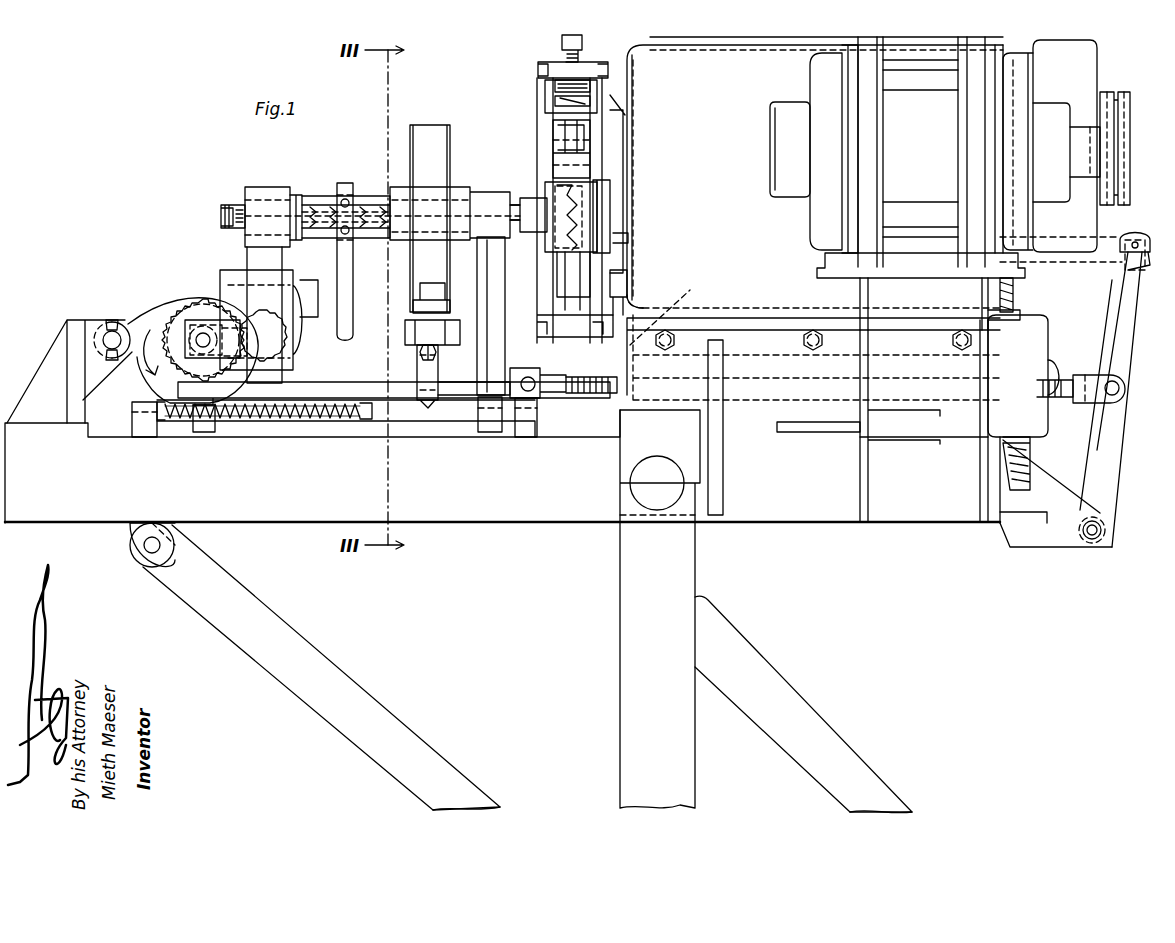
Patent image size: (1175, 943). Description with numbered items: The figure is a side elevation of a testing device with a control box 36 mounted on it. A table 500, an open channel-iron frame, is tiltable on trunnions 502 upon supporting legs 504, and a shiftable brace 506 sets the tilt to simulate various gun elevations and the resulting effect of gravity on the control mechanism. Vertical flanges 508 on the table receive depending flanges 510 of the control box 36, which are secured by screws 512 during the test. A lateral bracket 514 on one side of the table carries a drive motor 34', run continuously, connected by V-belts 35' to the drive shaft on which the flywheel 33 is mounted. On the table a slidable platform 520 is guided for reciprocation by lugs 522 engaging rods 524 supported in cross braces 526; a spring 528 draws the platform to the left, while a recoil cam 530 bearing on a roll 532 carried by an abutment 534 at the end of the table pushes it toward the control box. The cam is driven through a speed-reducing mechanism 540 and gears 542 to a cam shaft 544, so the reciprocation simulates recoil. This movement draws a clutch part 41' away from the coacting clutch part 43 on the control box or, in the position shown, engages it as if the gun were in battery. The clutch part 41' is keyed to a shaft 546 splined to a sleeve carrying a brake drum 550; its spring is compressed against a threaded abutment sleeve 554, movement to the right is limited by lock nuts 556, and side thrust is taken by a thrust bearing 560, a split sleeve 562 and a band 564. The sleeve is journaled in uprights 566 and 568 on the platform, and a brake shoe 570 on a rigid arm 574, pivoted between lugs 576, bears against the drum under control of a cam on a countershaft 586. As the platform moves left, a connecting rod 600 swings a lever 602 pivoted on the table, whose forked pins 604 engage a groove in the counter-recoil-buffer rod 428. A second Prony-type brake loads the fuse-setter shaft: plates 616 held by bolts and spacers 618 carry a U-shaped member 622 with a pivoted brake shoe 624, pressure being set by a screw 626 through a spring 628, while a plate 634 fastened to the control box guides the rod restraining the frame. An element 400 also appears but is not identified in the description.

The flywheel 33 is at (1098, 63).
The drive motor 34' is at (892, 157).
The V-belts 35' is at (1127, 134).
The control box 36 is at (715, 104).
The clutch part 41' is at (547, 222).
The clutch part 43 is at (598, 190).
The support block 400 is at (614, 287).
The counter-recoil-buffer rod 428 is at (1092, 268).
The table 500 is at (550, 515).
The trunnions 502 is at (660, 462).
The supporting legs 504 is at (700, 556).
The shiftable brace 506 is at (400, 733).
The vertical flanges 508 is at (786, 305).
The depending flanges 510 is at (663, 314).
The screws 512 is at (676, 337).
The lateral bracket 514 is at (868, 298).
The slidable platform 520 is at (340, 385).
The lugs 522 is at (492, 432).
The rods 524 is at (428, 420).
The cross braces 526 is at (540, 428).
The spring 528 is at (283, 422).
The recoil cam 530 is at (158, 316).
The roll 532 is at (112, 320).
The abutment 534 is at (60, 345).
The speed-reducing mechanism 540 is at (290, 278).
The gears 542 is at (222, 300).
The cam shaft 544 is at (203, 338).
The shaft 546 is at (514, 196).
The brake drum 550 is at (432, 130).
The threaded abutment sleeve 554 is at (250, 188).
The lock nuts 556 is at (228, 210).
The thrust bearing 560 is at (296, 194).
The split sleeve 562 is at (318, 195).
The band 564 is at (346, 184).
The upright 566 is at (480, 280).
The upright 568 is at (255, 240).
The brake shoe 570 is at (430, 282).
The rigid arm 574 is at (428, 338).
The lugs 576 is at (447, 367).
The countershaft 586 is at (378, 338).
The connecting rod 600 is at (768, 388).
The lever 602 is at (1092, 455).
The pins 604 is at (1134, 240).
The plates 616 is at (520, 282).
The bolts and spacers 618 is at (585, 335).
The U-shaped member 622 is at (550, 110).
The brake shoe 624 is at (565, 143).
The screw 626 is at (584, 45).
The spring 628 is at (557, 90).
The plate 634 is at (614, 98).